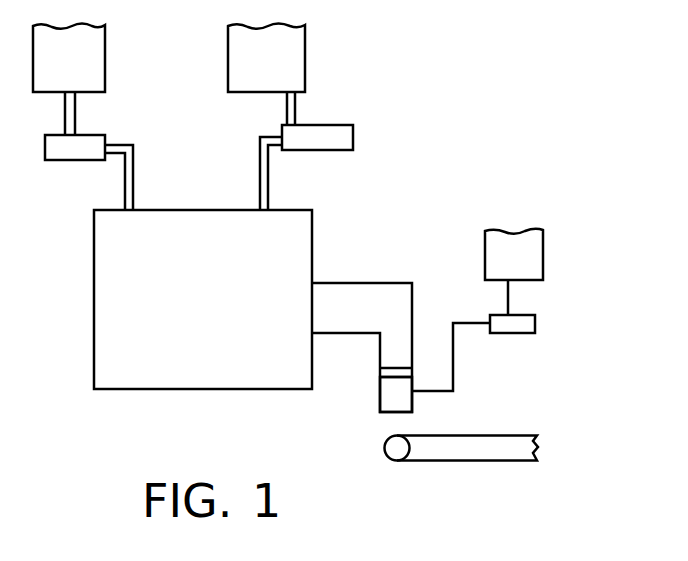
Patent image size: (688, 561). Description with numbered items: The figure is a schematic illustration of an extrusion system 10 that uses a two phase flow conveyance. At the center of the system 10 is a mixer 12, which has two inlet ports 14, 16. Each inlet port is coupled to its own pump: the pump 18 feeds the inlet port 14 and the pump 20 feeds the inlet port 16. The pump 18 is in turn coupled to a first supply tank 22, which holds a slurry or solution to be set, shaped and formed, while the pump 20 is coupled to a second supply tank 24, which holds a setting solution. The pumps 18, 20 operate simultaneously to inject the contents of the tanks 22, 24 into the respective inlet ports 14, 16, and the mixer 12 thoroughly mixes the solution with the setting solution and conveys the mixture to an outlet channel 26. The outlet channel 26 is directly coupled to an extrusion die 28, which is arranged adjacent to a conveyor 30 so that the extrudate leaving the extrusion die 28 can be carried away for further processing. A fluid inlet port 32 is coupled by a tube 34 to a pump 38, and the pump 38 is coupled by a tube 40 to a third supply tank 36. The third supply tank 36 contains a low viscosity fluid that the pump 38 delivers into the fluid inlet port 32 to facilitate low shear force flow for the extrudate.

The extrusion system 10 is at (417, 160).
The mixer 12 is at (103, 228).
The inlet port 14 is at (133, 185).
The inlet port 16 is at (262, 173).
The pump 18 is at (90, 140).
The pump 20 is at (338, 133).
The first supply tank 22 is at (97, 65).
The second supply tank 24 is at (298, 53).
The outlet channel 26 is at (333, 283).
The extrusion die 28 is at (380, 388).
The fluid inlet port 32 is at (413, 388).
The conveyor 30 is at (445, 453).
The tube 34 is at (455, 338).
The third supply tank 36 is at (535, 260).
The pump 38 is at (523, 327).
The tube 40 is at (507, 293).